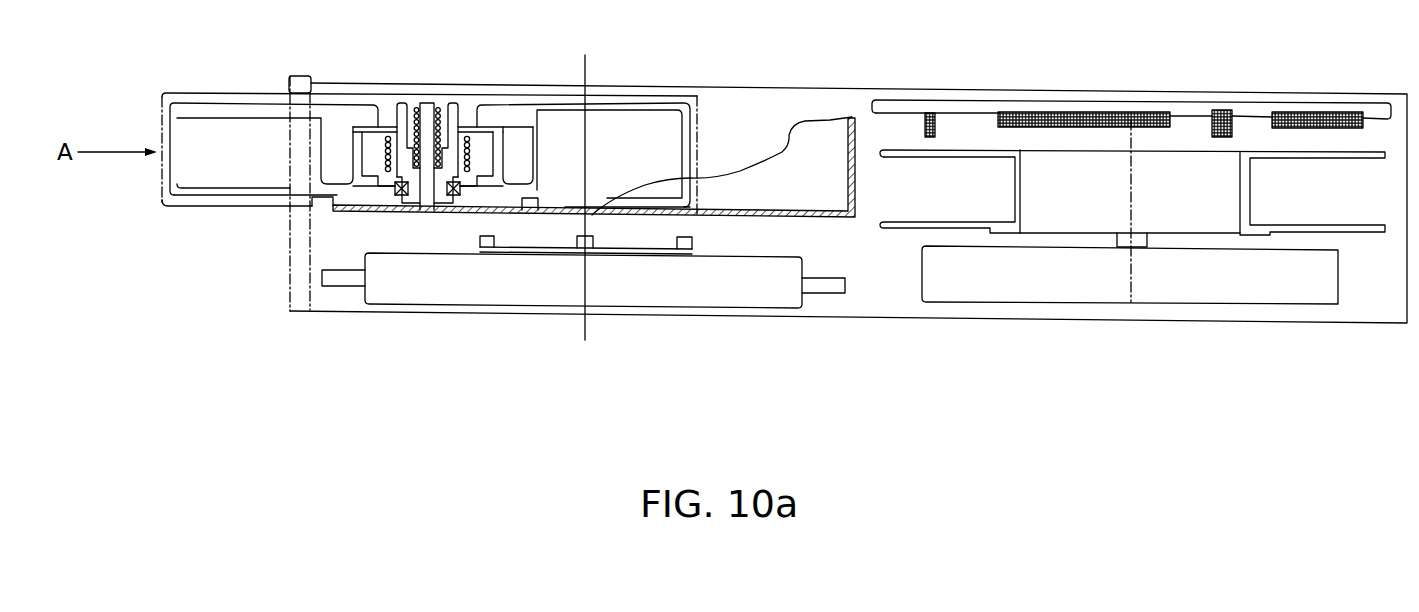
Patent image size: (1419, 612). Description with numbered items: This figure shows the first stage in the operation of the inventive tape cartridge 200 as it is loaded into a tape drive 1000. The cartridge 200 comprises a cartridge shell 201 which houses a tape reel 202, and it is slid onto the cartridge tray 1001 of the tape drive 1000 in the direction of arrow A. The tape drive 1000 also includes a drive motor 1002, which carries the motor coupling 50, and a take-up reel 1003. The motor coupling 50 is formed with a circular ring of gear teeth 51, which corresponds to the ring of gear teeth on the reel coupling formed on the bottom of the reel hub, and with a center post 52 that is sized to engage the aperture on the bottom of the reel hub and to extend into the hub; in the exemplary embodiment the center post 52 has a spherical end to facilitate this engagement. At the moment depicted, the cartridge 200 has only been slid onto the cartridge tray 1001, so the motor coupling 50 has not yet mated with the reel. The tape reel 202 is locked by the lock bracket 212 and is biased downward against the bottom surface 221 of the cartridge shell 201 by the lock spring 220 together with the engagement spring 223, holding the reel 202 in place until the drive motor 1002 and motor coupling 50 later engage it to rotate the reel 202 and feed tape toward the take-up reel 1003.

The tape cartridge 200 is at (223, 100).
The cartridge shell 201 is at (176, 96).
The tape reel 202 is at (249, 121).
The lock bracket 212 is at (475, 122).
The lock spring 220 is at (429, 108).
The bottom surface 221 is at (222, 203).
The engagement spring 223 is at (388, 160).
The motor coupling 50 is at (516, 255).
The circular ring of gear teeth 51 is at (480, 234).
The center post 52 is at (580, 236).
The tape drive 1000 is at (1036, 85).
The cartridge tray 1001 is at (761, 145).
The drive motor 1002 is at (658, 293).
The take-up reel 1003 is at (1186, 208).